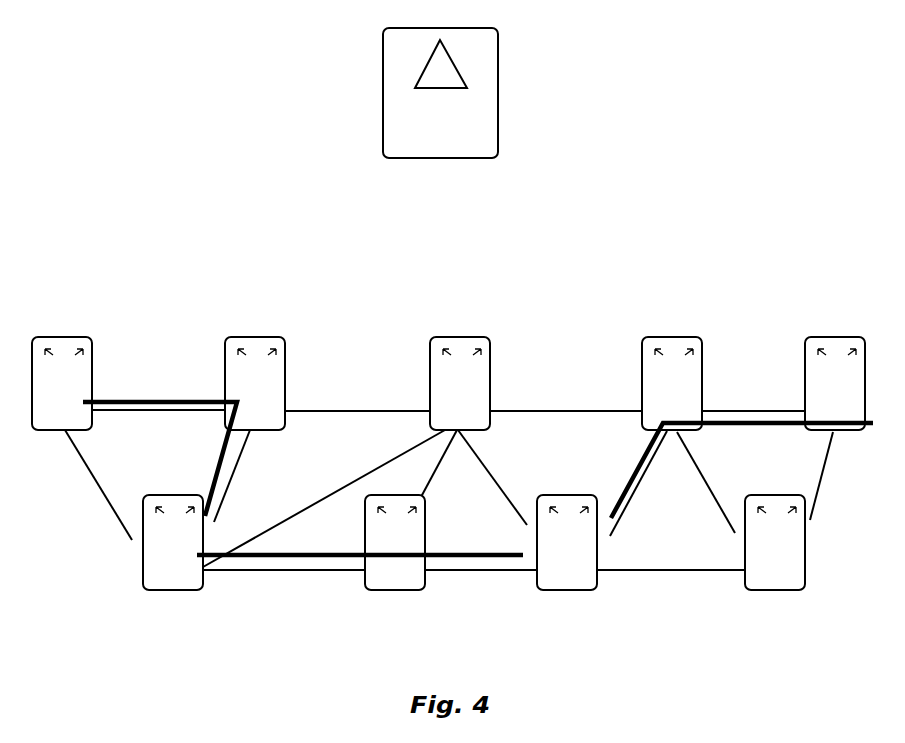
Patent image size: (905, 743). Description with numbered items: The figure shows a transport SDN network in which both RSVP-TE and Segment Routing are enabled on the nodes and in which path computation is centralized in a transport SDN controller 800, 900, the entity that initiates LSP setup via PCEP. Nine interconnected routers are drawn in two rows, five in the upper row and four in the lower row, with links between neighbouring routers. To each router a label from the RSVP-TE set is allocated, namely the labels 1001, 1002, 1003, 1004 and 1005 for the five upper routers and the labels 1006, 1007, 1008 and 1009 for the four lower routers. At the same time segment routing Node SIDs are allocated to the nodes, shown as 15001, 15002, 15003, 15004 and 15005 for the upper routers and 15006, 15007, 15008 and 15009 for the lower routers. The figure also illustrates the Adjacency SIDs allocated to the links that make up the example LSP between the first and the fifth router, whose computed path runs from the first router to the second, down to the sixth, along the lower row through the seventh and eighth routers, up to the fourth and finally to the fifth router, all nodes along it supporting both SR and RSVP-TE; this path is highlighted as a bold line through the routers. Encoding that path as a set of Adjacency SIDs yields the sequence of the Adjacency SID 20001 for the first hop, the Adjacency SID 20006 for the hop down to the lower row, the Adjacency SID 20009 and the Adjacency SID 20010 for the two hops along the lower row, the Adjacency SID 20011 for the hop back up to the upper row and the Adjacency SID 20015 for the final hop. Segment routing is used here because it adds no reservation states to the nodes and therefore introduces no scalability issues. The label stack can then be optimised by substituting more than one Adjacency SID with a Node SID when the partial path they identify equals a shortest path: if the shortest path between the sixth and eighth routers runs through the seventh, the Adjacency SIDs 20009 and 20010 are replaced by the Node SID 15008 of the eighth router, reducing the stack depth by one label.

The transport SDN controller 800 is at (497, 93).
The transport SDN controller 900 is at (498, 70).
The RSVP-TE label of node R1 1001 is at (61, 383).
The RSVP-TE label of node R2 1002 is at (256, 383).
The RSVP-TE label of node R3 1003 is at (461, 383).
The RSVP-TE label of node R4 1004 is at (672, 383).
The RSVP-TE label of node R5 1005 is at (836, 383).
The RSVP-TE label of node R6 1006 is at (172, 542).
The RSVP-TE label of node R7 1007 is at (396, 542).
The RSVP-TE label of node R8 1008 is at (567, 542).
The RSVP-TE label of node R9 1009 is at (776, 542).
The Node SID of R1 15001 is at (61, 361).
The Node SID of R2 15002 is at (256, 361).
The Node SID of R3 15003 is at (461, 361).
The Node SID of R4 15004 is at (673, 361).
The Node SID of R5 15005 is at (836, 361).
The Node SID of R6 15006 is at (172, 564).
The Node SID of R7 15007 is at (396, 564).
The Node SID of R8 15008 is at (567, 564).
The Node SID of R9 15009 is at (776, 564).
The Adjacency SID R1-R2 20001 is at (158, 383).
The Adjacency SID R2-R6 20006 is at (186, 476).
The Adjacency SID R6-R7 20009 is at (283, 542).
The Adjacency SID R7-R8 20010 is at (481, 542).
The Adjacency SID R8-R4 20011 is at (604, 483).
The Adjacency SID R4-R5 20015 is at (753, 438).